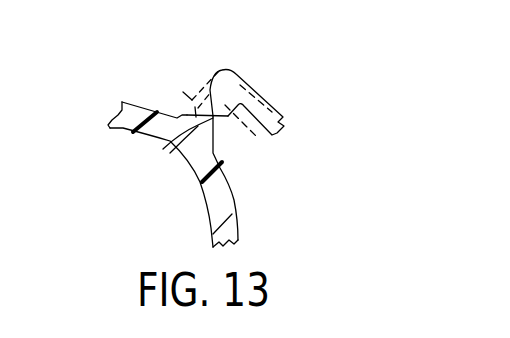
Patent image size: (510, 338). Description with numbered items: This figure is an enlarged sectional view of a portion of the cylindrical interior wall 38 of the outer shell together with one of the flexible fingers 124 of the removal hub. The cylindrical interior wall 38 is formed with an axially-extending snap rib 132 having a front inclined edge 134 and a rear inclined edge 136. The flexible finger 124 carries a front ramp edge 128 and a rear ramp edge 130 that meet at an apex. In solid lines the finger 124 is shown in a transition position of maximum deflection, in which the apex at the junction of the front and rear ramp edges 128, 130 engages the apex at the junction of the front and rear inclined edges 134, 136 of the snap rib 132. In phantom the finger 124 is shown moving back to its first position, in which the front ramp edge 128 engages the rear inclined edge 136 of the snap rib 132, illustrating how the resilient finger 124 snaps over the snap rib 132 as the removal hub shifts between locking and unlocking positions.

The cylindrical interior wall 38 is at (230, 214).
The flexible finger 124 is at (283, 117).
The front ramp edge 128 is at (223, 112).
The rear ramp edge 130 is at (183, 92).
The snap rib 132 is at (168, 146).
The front inclined edge 134 is at (217, 130).
The rear inclined edge 136 is at (187, 113).